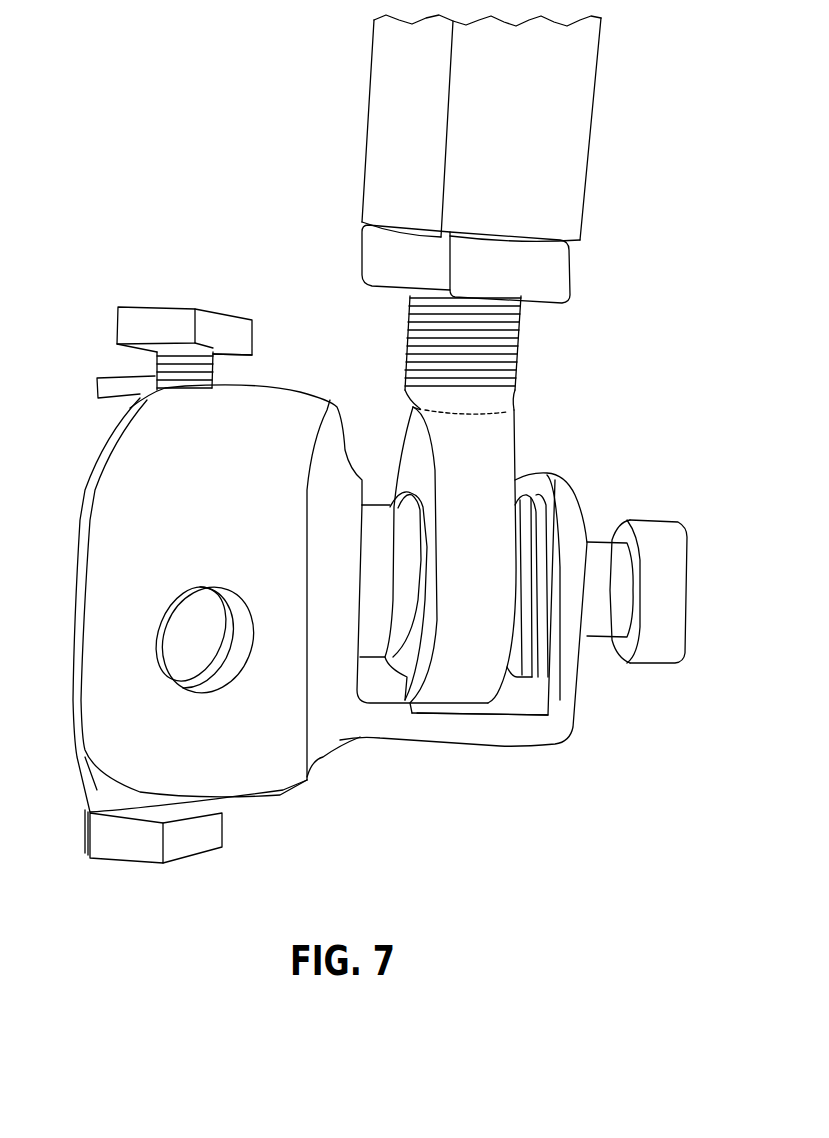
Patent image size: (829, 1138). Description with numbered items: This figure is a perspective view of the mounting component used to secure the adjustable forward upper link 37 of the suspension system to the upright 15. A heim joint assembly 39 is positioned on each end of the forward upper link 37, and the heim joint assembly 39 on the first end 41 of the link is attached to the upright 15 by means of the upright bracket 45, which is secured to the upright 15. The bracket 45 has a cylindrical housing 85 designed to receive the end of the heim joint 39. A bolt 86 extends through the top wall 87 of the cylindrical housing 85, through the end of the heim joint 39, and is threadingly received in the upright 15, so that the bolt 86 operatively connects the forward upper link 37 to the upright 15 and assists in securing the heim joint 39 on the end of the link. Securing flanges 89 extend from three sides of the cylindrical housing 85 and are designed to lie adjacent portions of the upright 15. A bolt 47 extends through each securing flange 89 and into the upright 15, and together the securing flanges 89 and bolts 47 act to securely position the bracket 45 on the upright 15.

The upright 15 is at (125, 474).
The forward upper link 37 is at (580, 114).
The heim joint assembly 39 is at (488, 443).
The first end 41 is at (538, 270).
The upright bracket 45 is at (568, 742).
The bolt 47 is at (125, 862).
The housing 85 is at (512, 746).
The bolt 86 is at (680, 597).
The top wall 87 is at (580, 686).
The securing flanges 89 is at (283, 785).